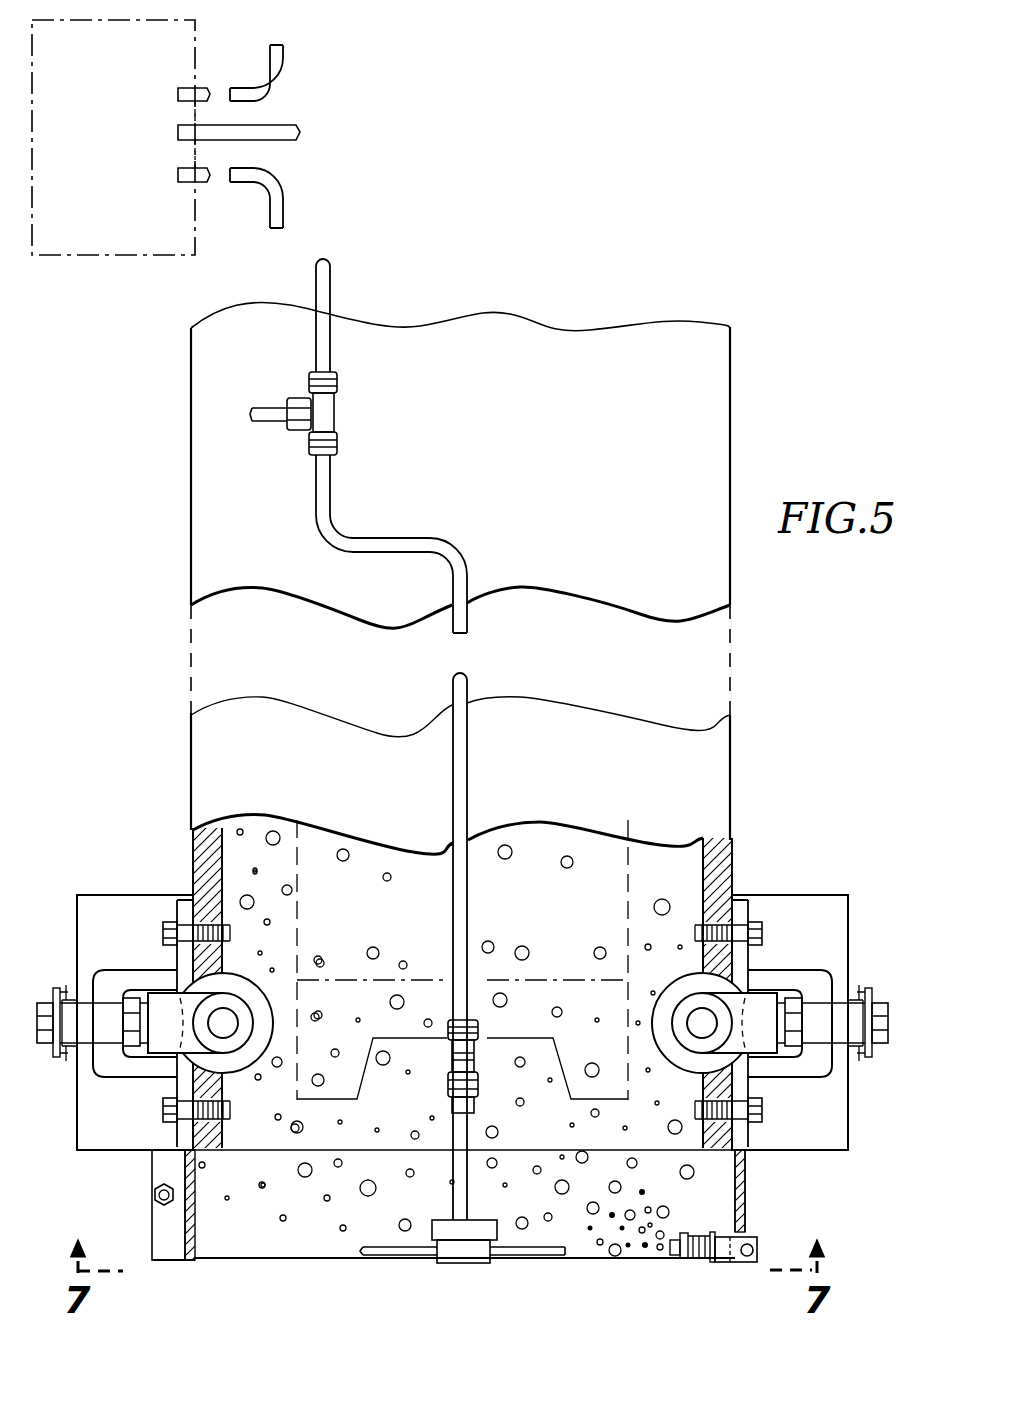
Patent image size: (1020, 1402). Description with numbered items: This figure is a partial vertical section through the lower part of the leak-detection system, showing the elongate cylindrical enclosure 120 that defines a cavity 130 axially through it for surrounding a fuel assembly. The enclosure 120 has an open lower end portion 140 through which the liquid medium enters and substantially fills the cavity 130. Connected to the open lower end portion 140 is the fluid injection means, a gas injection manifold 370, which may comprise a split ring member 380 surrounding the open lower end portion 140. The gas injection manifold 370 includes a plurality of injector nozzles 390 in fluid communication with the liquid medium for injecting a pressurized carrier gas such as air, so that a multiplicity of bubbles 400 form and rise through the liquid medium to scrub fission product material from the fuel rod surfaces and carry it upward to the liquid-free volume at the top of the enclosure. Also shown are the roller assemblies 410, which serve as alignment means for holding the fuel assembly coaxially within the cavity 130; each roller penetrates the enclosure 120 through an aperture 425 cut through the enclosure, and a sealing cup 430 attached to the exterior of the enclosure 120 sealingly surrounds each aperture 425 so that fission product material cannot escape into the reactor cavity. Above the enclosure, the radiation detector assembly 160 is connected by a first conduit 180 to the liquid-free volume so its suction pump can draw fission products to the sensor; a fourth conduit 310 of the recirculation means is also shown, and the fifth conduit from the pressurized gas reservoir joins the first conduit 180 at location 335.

The enclosure 120 is at (218, 527).
The cavity 130 is at (225, 857).
The open lower end portion 140 is at (228, 1085).
The radiation detector assembly 160 is at (97, 258).
The first conduit 180 is at (283, 127).
The fourth conduit 310 is at (283, 72).
The location 335 is at (240, 185).
The gas injection manifold 370 is at (743, 1168).
The split ring member 380 is at (747, 1190).
The injector nozzles 390 is at (463, 1252).
The bubbles 400 is at (647, 1245).
The roller assemblies 410 is at (110, 980).
The aperture 425 is at (772, 978).
The sealing cup 430 is at (75, 928).